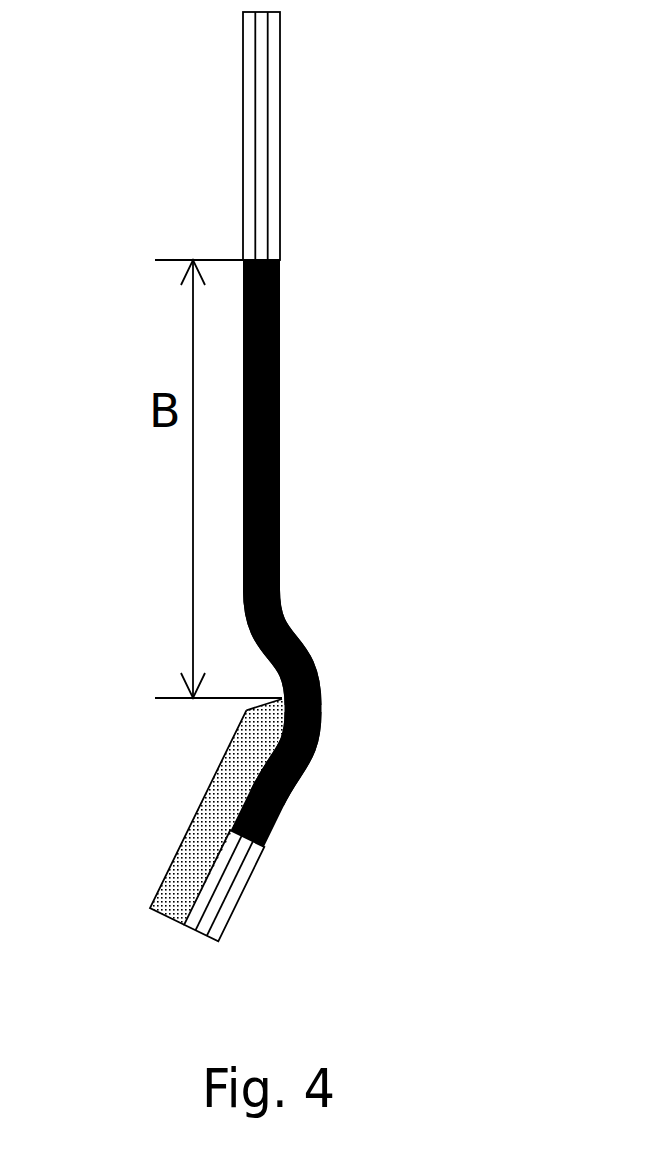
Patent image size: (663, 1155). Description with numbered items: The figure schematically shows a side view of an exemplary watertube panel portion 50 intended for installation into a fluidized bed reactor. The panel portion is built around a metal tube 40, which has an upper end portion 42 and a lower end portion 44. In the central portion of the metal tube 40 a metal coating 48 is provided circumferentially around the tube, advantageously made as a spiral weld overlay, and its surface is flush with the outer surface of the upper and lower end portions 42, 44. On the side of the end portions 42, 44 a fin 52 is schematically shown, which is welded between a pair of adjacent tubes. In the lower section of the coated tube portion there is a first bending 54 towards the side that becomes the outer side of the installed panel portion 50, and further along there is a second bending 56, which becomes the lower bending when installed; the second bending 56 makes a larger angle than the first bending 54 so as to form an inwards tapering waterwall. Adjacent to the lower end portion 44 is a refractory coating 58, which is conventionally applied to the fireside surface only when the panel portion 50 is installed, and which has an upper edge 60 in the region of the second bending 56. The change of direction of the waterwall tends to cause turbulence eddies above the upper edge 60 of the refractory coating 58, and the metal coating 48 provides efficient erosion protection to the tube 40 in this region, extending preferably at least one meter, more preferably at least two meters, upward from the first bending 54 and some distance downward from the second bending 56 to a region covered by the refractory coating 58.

The metal tube 40 is at (275, 102).
The upper end portion 42 is at (273, 220).
The lower end portion 44 is at (228, 903).
The metal coating 48 is at (282, 442).
The watertube panel portion 50 is at (250, 249).
The fin 52 is at (260, 183).
The first bending 54 is at (280, 578).
The second bending 56 is at (323, 702).
The refractory coating 58 is at (180, 871).
The upper edge 60 is at (248, 706).